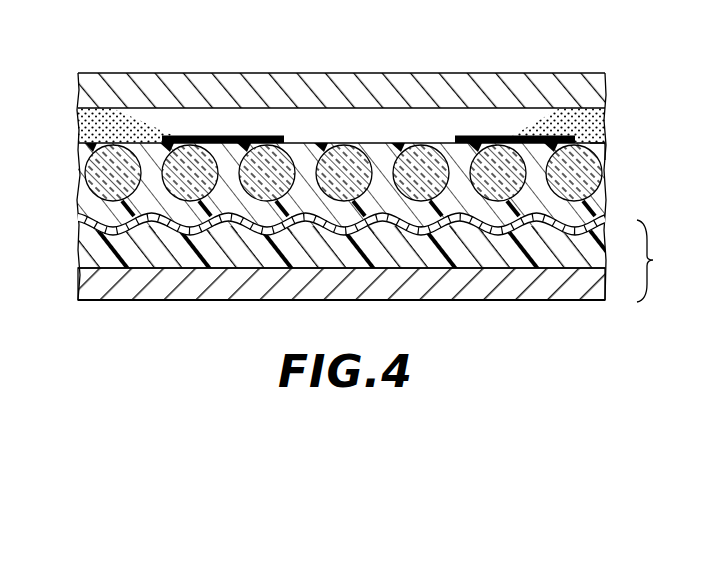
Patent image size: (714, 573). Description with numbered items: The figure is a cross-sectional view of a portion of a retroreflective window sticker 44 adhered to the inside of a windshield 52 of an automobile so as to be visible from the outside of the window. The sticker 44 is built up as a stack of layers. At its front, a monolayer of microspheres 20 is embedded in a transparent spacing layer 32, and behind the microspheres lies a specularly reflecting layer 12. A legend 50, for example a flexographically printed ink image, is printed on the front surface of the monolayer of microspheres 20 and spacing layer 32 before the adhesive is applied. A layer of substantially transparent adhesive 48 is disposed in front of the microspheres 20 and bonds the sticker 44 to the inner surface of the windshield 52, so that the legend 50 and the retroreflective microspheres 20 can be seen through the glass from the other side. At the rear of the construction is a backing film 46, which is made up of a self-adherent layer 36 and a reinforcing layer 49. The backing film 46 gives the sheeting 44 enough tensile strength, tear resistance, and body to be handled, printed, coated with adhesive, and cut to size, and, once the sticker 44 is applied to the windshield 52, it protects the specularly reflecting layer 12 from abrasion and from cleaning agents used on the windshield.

The retroreflective window sticker 44 is at (116, 62).
The windshield 52 is at (200, 80).
The transparent adhesive layer 48 is at (92, 122).
The legend 50 is at (238, 138).
The microspheres 20 is at (282, 160).
The transparent spacing layer 32 is at (604, 150).
The specularly reflecting layer 12 is at (80, 218).
The self-adherent layer 36 is at (88, 243).
The reinforcing layer 49 is at (200, 291).
The backing film 46 is at (664, 261).